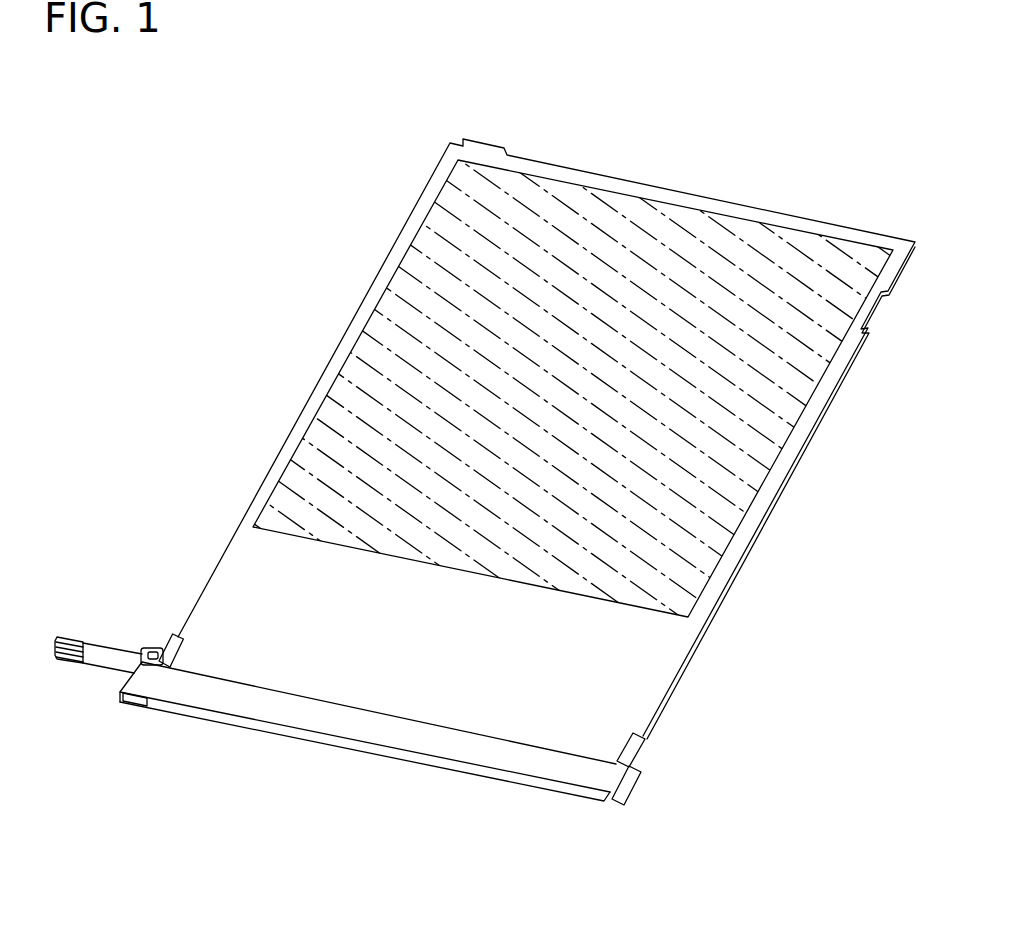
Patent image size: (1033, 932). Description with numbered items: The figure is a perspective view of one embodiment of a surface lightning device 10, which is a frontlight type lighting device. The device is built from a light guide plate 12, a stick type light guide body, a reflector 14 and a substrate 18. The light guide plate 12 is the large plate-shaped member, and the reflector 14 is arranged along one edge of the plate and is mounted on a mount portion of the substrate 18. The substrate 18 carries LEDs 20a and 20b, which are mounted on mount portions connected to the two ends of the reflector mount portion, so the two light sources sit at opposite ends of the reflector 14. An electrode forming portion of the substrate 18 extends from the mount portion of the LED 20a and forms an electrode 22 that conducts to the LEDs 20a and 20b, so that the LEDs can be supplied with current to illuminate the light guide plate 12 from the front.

The surface lightning device 10 is at (323, 202).
The light guide plate 12 is at (301, 371).
The reflector 14 is at (347, 760).
The substrate 18 is at (108, 633).
The LED 20a is at (133, 707).
The LED 20b is at (641, 786).
The electrode 22 is at (67, 633).